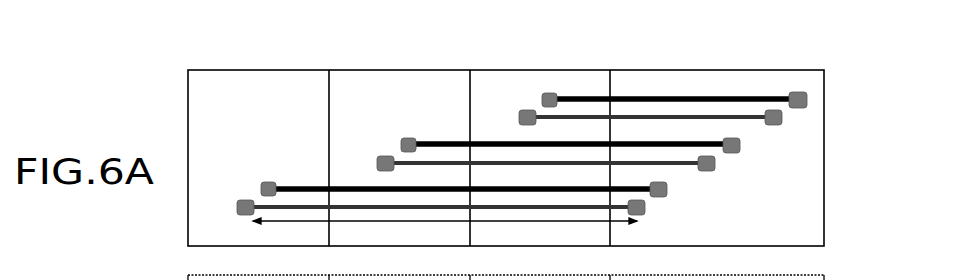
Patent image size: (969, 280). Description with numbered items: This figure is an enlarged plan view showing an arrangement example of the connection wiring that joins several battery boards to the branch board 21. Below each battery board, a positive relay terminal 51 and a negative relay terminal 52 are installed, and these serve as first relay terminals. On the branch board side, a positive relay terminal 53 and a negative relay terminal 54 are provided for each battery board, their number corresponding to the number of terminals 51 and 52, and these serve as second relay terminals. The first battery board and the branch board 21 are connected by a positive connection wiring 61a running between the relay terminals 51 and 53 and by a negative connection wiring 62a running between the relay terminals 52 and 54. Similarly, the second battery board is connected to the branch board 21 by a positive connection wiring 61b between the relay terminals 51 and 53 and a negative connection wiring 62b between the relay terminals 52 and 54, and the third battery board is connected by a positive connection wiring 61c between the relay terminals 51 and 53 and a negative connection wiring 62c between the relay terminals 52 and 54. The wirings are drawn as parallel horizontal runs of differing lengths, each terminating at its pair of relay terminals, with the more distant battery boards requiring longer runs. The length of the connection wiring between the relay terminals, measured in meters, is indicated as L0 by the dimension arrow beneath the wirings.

The branch board 21 is at (824, 157).
The positive relay terminal 51 is at (552, 93).
The negative relay terminal 52 is at (519, 117).
The positive relay terminal 53 is at (800, 92).
The negative relay terminal 54 is at (776, 125).
The positive connection wiring 61a is at (762, 99).
The positive connection wiring 61b is at (457, 144).
The positive connection wiring 61c is at (313, 189).
The negative connection wiring 62a is at (723, 117).
The negative connection wiring 62b is at (447, 163).
The negative connection wiring 62c is at (287, 207).
The length of the connection wiring L0 is at (398, 224).